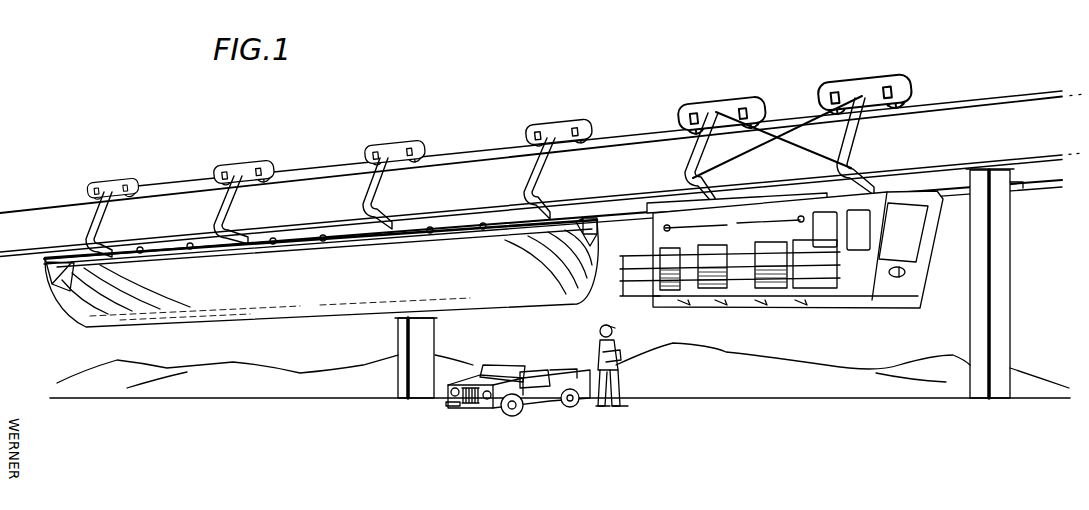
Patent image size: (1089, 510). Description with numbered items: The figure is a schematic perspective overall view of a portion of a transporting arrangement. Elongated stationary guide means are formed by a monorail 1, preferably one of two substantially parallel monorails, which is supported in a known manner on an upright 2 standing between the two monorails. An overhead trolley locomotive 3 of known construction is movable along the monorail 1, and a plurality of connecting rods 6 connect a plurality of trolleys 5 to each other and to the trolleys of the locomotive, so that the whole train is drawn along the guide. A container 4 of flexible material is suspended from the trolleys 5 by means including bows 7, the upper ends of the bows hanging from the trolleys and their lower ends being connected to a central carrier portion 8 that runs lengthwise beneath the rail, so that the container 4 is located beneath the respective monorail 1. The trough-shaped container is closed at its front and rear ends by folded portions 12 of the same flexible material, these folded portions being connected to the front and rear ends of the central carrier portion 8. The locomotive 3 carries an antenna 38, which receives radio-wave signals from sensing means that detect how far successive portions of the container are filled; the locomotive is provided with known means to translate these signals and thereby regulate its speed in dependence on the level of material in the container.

The monorail 1 is at (956, 118).
The upright 2 is at (999, 300).
The overhead trolley locomotive 3 is at (780, 278).
The container 4 is at (352, 293).
The trolley 5 is at (403, 146).
The connecting rod 6 is at (481, 146).
The bow 7 is at (218, 202).
The central carrier portion 8 is at (411, 231).
The folded portion 12 is at (79, 313).
The antenna 38 is at (697, 244).